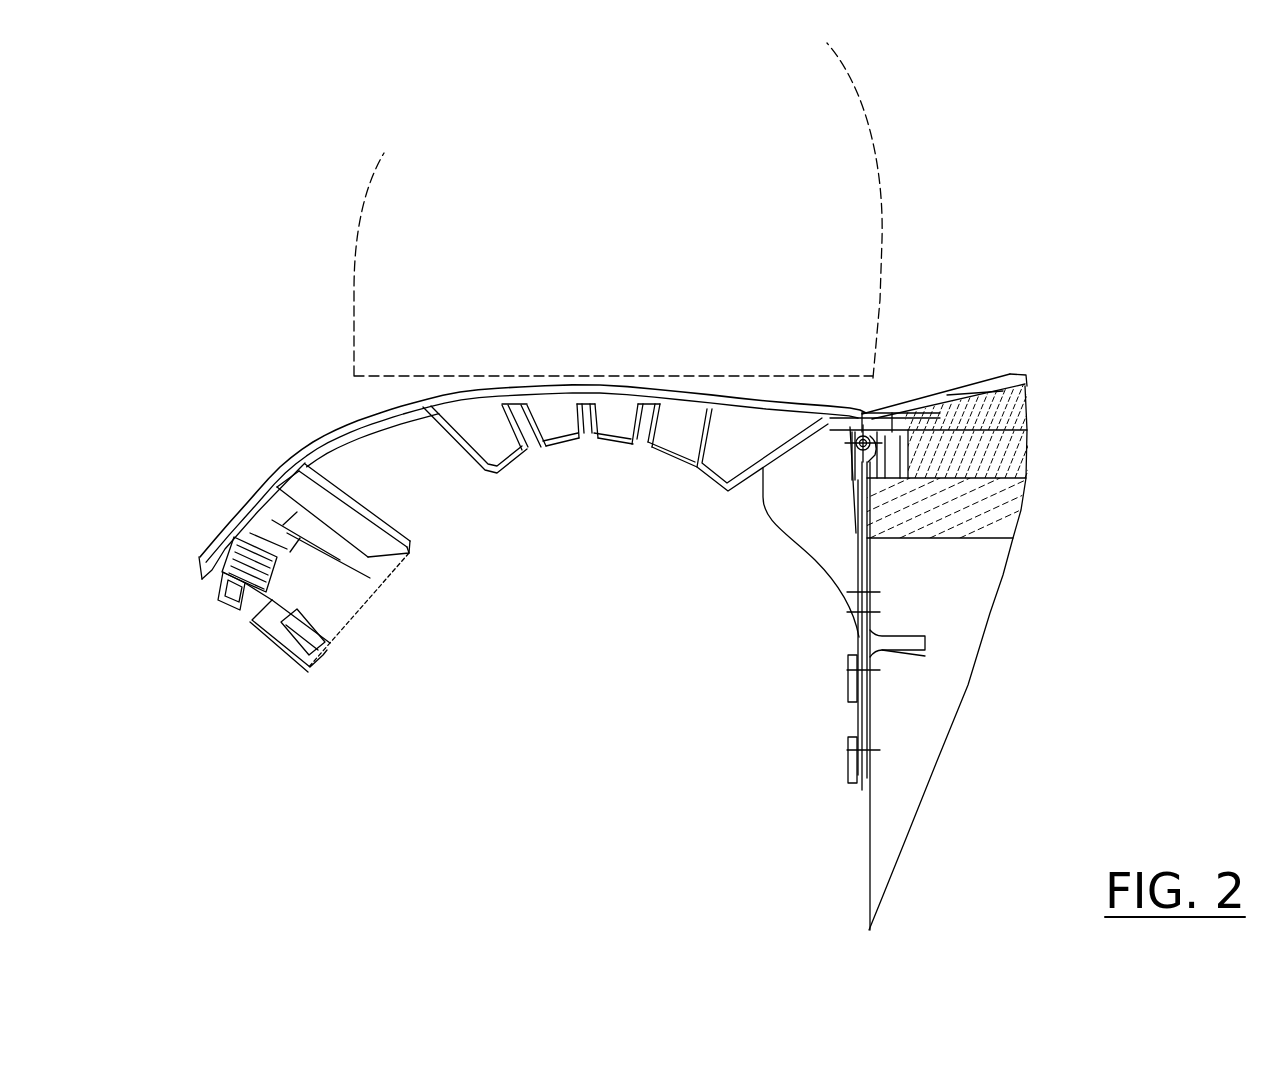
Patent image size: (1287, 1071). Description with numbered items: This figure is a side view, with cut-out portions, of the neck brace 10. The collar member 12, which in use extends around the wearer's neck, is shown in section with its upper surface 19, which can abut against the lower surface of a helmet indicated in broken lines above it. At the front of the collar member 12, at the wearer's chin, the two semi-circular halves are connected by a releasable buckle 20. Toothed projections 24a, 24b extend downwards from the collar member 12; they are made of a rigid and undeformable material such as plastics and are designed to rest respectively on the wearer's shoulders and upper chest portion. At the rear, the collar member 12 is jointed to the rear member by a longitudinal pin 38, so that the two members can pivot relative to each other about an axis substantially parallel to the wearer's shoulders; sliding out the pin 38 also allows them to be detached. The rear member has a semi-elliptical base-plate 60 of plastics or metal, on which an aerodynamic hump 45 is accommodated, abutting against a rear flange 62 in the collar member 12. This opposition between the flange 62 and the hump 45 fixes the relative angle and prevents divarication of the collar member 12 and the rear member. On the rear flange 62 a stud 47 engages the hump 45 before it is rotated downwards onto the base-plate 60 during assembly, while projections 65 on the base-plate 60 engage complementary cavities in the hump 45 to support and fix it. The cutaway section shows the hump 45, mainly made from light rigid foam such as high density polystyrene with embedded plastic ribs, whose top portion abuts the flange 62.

The neck brace 10 is at (1016, 266).
The collar member 12 is at (337, 427).
The upper surface 19 is at (601, 382).
The releasable buckle 20 is at (228, 600).
The toothed projection 24a is at (368, 590).
The toothed projection 24b is at (503, 448).
The longitudinal pin 38 is at (872, 432).
The aerodynamic hump 45 is at (908, 762).
The stud 47 is at (892, 467).
The base-plate 60 is at (862, 708).
The rear flange 62 is at (1010, 391).
The projections 65 is at (897, 640).